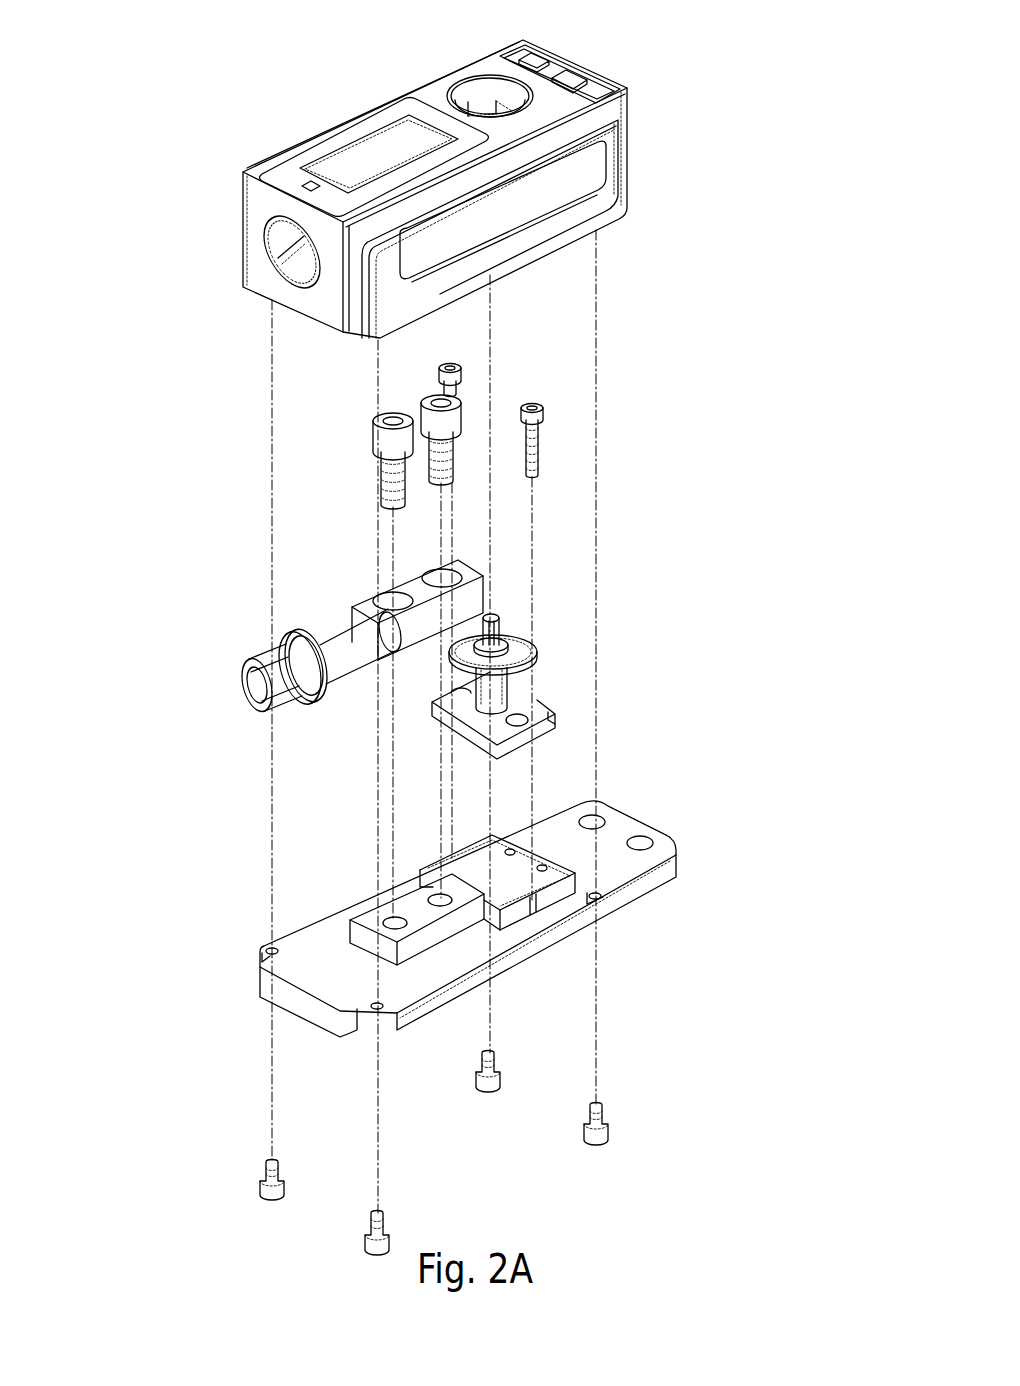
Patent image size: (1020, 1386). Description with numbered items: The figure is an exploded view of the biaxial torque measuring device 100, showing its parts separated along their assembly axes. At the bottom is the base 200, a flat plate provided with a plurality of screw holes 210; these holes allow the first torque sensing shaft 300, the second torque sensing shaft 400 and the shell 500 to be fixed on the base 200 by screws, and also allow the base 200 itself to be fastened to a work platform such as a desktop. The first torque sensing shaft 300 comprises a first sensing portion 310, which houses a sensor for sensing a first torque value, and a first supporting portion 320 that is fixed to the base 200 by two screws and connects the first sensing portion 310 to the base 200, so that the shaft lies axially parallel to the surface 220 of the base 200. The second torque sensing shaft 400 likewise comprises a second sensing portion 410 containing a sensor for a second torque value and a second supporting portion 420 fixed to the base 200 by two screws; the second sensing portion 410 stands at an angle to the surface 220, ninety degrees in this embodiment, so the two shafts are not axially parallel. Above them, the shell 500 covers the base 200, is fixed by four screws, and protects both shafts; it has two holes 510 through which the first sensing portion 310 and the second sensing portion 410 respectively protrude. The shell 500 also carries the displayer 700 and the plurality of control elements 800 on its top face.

The biaxial torque measuring device 100 is at (144, 77).
The base 200 is at (645, 875).
The screw holes 210 is at (640, 843).
The surface 220 is at (615, 823).
The first torque sensing shaft 300 is at (332, 633).
The first sensing portion 310 is at (258, 700).
The first supporting portion 320 is at (487, 583).
The second torque sensing shaft 400 is at (503, 680).
The second sensing portion 410 is at (493, 608).
The second supporting portion 420 is at (547, 728).
The shell 500 is at (432, 93).
The holes 510 is at (485, 100).
The displayer 700 is at (347, 167).
The control elements 800 is at (580, 72).